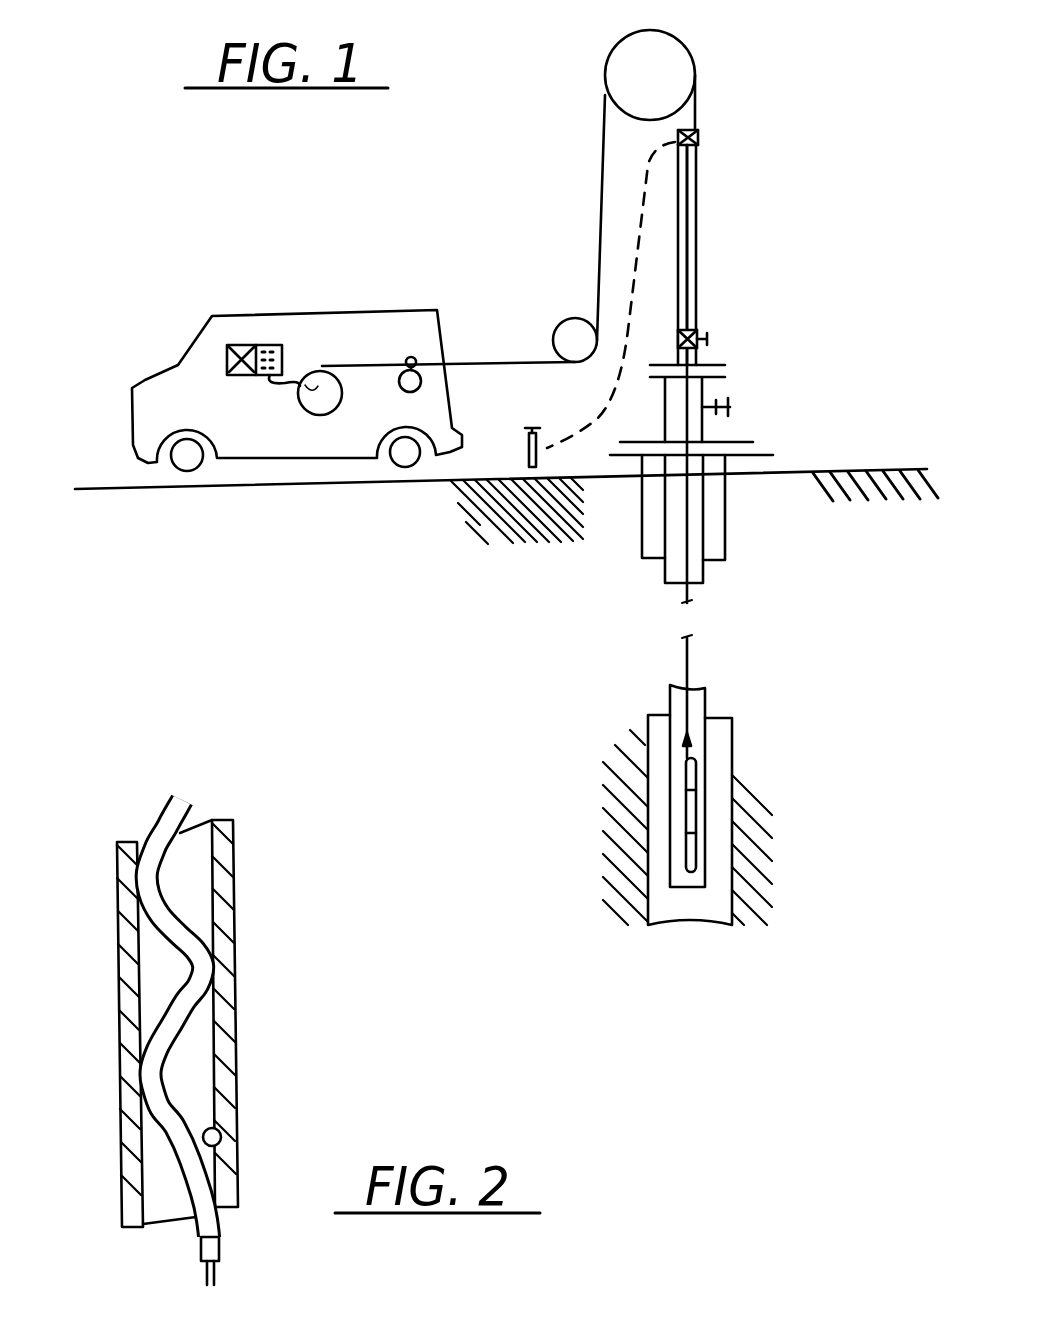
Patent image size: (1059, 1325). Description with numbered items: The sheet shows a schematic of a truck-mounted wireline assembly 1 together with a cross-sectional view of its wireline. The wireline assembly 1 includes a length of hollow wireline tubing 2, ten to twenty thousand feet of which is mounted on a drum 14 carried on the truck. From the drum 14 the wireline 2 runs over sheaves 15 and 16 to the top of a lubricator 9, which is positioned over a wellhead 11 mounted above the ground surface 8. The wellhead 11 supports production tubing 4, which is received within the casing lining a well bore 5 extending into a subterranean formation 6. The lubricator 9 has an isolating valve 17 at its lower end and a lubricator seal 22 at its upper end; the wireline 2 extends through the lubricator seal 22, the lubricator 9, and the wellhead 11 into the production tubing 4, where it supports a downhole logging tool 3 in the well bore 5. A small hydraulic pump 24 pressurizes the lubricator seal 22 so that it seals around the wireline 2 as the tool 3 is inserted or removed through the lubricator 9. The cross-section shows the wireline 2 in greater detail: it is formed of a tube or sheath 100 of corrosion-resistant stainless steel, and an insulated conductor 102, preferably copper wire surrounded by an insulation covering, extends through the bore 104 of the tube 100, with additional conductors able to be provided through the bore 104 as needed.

In FIG. 1, the wireline assembly 1 is at (465, 265).
In FIG. 1, the wireline tubing 2 is at (604, 190).
In FIG. 2, the wireline tubing 2 is at (240, 1001).
In FIG. 1, the downhole tool 3 is at (690, 805).
In FIG. 1, the production tubing 4 is at (703, 513).
In FIG. 1, the well bore 5 is at (725, 560).
In FIG. 1, the subterranean formation 6 is at (625, 768).
In FIG. 1, the ground surface 8 is at (860, 468).
In FIG. 1, the lubricator 9 is at (700, 208).
In FIG. 1, the wellhead 11 is at (705, 405).
In FIG. 1, the drum 14 is at (313, 417).
In FIG. 1, the sheave 15 is at (422, 384).
In FIG. 1, the sheave 16 is at (670, 57).
In FIG. 1, the isolating valve 17 is at (700, 350).
In FIG. 1, the lubricator seal 22 is at (693, 133).
In FIG. 1, the hydraulic pump 24 is at (528, 462).
In FIG. 2, the tube 100 is at (235, 855).
In FIG. 2, the insulated conductor 102 is at (128, 940).
In FIG. 2, the bore 104 is at (237, 1150).